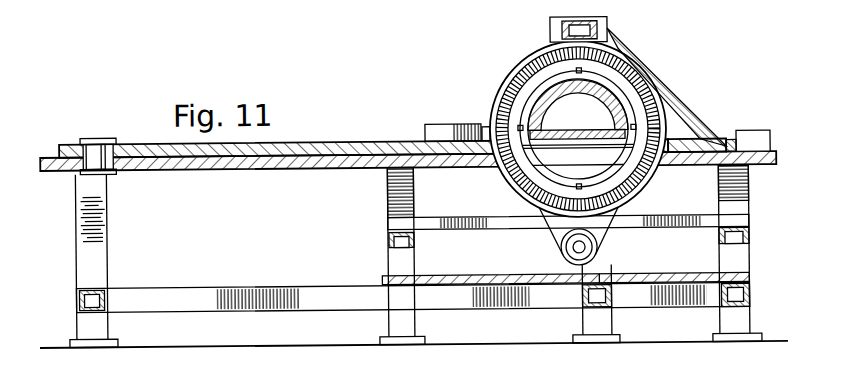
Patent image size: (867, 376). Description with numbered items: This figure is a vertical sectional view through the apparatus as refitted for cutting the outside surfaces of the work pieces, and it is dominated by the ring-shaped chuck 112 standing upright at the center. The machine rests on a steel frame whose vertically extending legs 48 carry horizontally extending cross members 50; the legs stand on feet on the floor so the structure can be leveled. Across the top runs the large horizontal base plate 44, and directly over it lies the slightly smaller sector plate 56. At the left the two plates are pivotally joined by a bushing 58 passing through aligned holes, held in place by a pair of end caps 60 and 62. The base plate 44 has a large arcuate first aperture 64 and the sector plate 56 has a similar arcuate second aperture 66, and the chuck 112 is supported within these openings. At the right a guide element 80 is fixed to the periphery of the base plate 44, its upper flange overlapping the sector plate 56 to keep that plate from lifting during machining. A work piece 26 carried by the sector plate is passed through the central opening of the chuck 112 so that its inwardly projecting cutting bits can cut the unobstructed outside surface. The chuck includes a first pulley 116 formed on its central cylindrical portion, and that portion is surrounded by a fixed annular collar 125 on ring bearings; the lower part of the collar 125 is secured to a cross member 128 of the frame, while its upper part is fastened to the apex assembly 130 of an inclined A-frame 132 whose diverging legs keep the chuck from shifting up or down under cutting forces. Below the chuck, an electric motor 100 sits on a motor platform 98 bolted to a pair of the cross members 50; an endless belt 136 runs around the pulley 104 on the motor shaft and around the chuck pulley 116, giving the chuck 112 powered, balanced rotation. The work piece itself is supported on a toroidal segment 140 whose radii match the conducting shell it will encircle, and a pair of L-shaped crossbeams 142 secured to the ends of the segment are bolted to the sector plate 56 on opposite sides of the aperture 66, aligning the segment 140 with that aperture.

The work piece 26 is at (630, 106).
The base plate 44 is at (307, 168).
The vertically extending legs 48 is at (97, 269).
The horizontally extending cross members 50 is at (250, 292).
The sector plate 56 is at (340, 150).
The bushing 58 is at (103, 159).
The end cap 60 is at (93, 139).
The end cap 62 is at (97, 174).
The first aperture 64 is at (722, 148).
The second aperture 66 is at (486, 136).
The guide element 80 is at (752, 147).
The motor platform 98 is at (470, 277).
The electric motor 100 is at (602, 263).
The pulley 104 is at (548, 281).
The ring-shaped chuck 112 is at (500, 70).
The first pulley 116 is at (638, 88).
The annular collar 125 is at (527, 58).
The cross member 128 is at (490, 222).
The apex assembly 130 is at (558, 38).
The A-frame 132 is at (703, 117).
The endless belt 136 is at (550, 240).
The toroidal segment 140 is at (607, 86).
The L-shaped crossbeams 142 is at (440, 139).